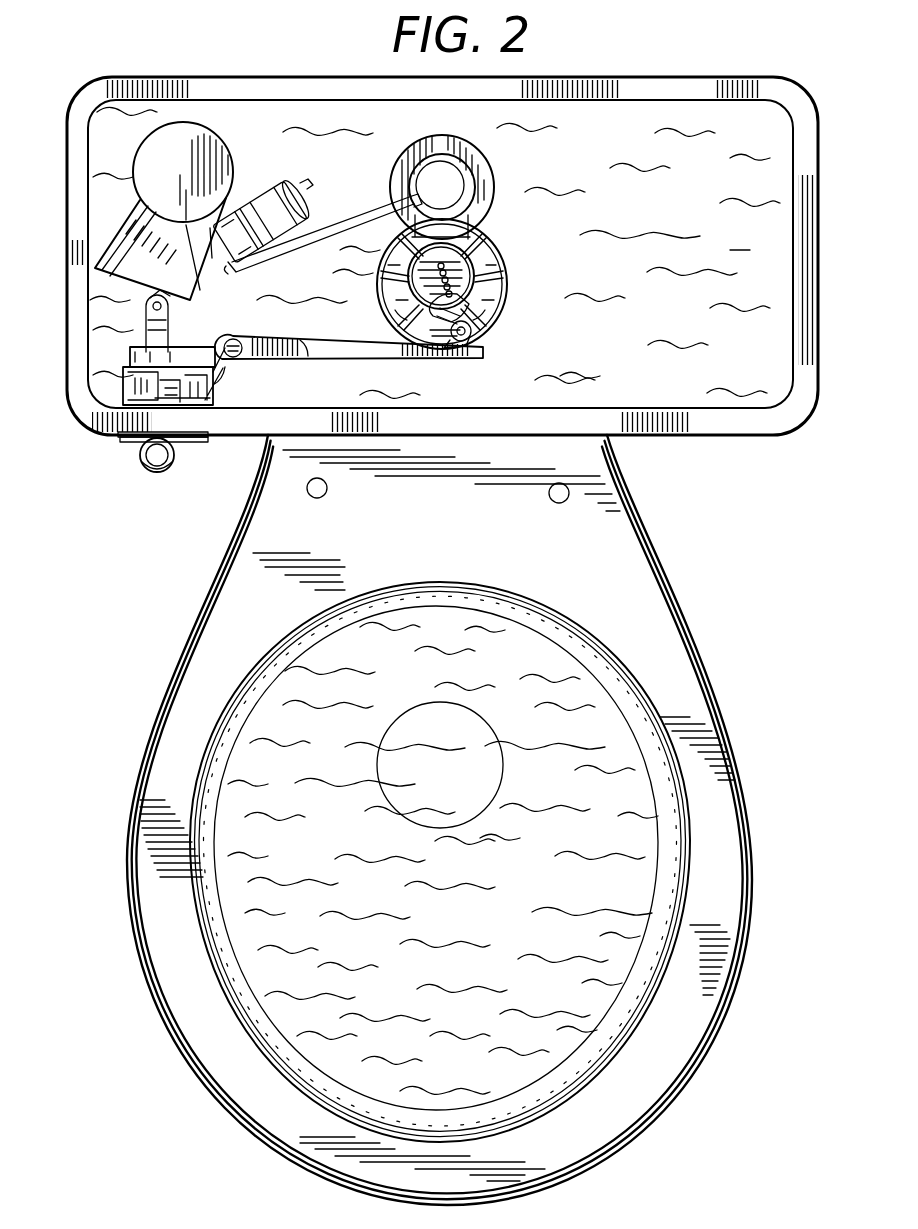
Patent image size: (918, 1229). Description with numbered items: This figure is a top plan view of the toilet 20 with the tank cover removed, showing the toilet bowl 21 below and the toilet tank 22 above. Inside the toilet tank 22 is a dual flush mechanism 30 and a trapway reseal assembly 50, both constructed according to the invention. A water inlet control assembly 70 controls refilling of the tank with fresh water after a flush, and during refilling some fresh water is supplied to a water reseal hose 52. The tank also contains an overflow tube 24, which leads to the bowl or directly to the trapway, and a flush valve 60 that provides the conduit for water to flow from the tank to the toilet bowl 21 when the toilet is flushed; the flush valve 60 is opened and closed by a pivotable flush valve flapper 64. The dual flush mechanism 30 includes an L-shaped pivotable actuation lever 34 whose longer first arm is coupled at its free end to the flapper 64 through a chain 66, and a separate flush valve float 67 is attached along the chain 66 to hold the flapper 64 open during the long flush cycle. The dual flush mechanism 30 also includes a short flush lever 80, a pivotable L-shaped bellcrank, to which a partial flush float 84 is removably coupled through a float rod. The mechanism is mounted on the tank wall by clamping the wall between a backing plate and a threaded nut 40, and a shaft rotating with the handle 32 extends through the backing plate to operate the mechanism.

The toilet 20 is at (456, 820).
The toilet bowl 21 is at (758, 776).
The toilet tank 22 is at (819, 214).
The overflow tube 24 is at (470, 150).
The dual flush mechanism 30 is at (119, 363).
The handle 32 is at (165, 468).
The actuation lever 34 is at (298, 360).
The threaded nut 40 is at (203, 439).
The trapway reseal assembly 50 is at (318, 163).
The water reseal hose 52 is at (300, 265).
The flush valve 60 is at (474, 305).
The flush valve flapper 64 is at (500, 244).
The chain 66 is at (476, 298).
The flush valve float 67 is at (470, 338).
The water inlet control assembly 70 is at (177, 172).
The short flush lever 80 is at (165, 325).
The partial flush float 84 is at (246, 197).